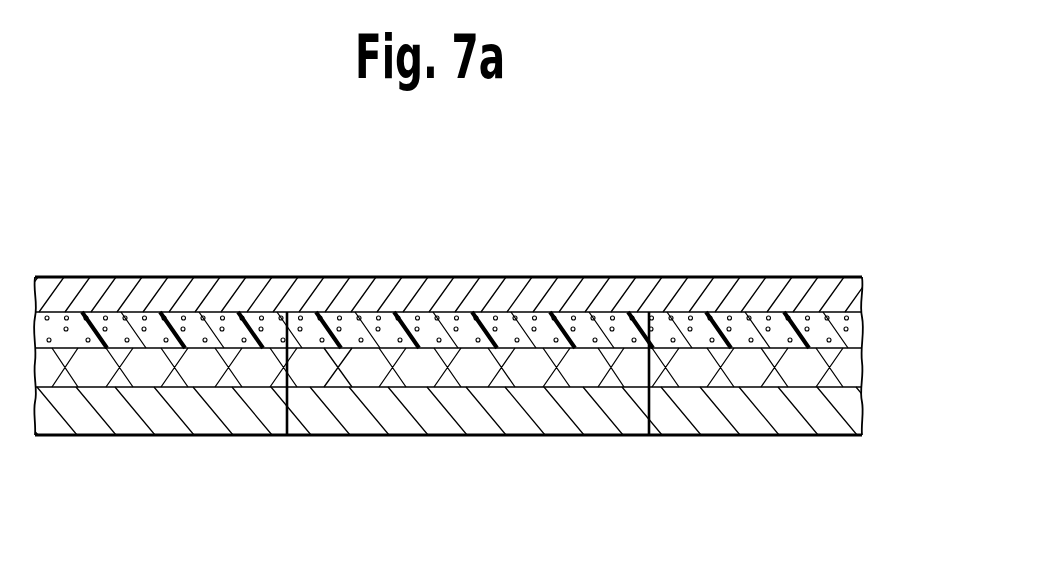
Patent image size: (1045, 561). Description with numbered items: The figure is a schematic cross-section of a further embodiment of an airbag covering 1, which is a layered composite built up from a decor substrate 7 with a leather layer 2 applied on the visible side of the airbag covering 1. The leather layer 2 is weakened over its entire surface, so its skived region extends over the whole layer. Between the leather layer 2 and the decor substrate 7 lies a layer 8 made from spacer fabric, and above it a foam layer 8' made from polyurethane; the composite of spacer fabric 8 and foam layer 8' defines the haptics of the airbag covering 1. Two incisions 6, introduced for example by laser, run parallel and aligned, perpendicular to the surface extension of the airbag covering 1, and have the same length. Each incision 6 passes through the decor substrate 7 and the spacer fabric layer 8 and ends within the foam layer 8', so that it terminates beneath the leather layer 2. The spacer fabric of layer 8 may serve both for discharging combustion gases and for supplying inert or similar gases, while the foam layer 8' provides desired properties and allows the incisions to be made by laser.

The airbag covering 1 is at (503, 241).
The leather layer 2 is at (768, 298).
The foam layer 8' is at (492, 320).
The layer made from spacer fabric 8 is at (488, 379).
The decor substrate 7 is at (757, 415).
The incision 6 is at (300, 435).